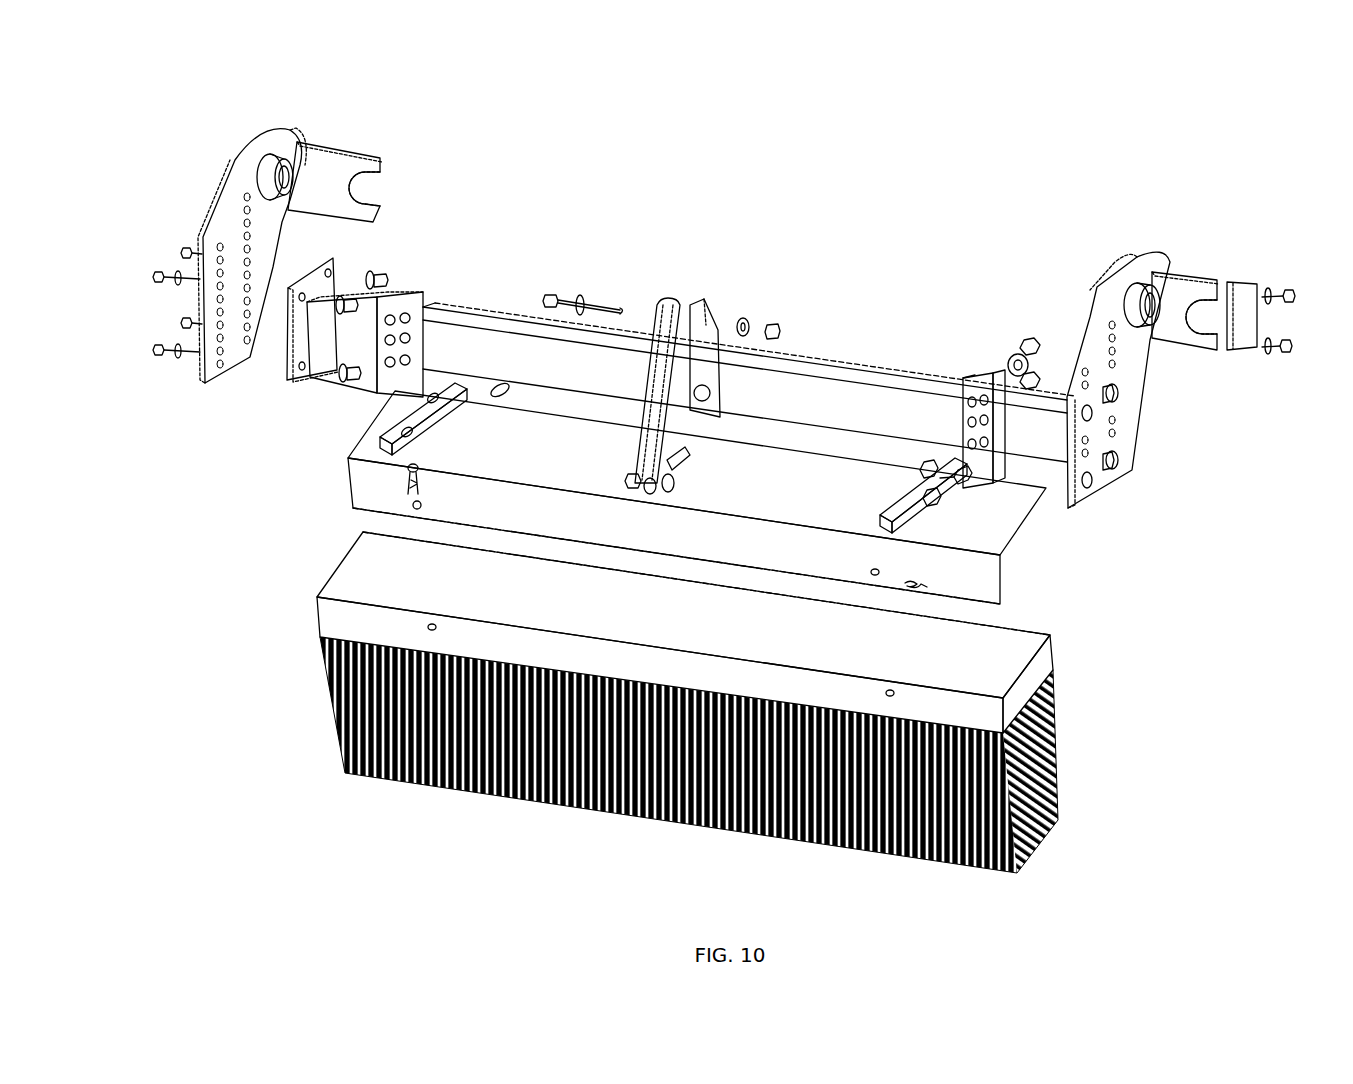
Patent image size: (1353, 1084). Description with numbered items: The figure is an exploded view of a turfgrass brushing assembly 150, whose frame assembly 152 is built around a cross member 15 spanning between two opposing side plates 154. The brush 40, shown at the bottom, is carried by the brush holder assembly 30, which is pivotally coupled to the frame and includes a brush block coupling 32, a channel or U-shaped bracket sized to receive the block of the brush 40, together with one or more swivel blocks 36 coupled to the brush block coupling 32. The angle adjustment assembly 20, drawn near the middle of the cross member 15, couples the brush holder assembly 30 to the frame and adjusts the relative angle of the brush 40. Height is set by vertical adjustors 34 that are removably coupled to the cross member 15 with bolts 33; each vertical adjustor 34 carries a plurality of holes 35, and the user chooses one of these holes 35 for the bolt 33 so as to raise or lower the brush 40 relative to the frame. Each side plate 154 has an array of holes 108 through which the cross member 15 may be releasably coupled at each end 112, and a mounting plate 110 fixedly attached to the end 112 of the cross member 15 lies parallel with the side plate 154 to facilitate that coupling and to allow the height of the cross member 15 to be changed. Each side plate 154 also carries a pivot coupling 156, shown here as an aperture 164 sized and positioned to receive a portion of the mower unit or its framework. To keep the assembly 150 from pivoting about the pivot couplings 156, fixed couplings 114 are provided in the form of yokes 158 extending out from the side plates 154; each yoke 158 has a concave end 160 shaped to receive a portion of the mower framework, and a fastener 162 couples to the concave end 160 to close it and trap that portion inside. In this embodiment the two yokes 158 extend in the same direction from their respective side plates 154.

The cross member 15 is at (482, 322).
The angle adjustment assembly 20 is at (690, 284).
The brush holder assembly 30 is at (1050, 595).
The brush block coupling 32 is at (950, 507).
The bolt 33 is at (388, 360).
The vertical adjustor 34 is at (963, 388).
The plurality of holes 35 is at (982, 440).
The swivel block 36 is at (410, 452).
The brush 40 is at (297, 693).
The array of holes 108 is at (247, 292).
The mounting plate 110 is at (288, 345).
The end 112 is at (315, 348).
The fixed coupling 114 is at (432, 198).
The turfgrass brushing assembly 150 is at (988, 149).
The frame assembly 152 is at (155, 221).
The side plate 154 is at (250, 150).
The pivot coupling 156 is at (262, 176).
The yoke 158 is at (313, 172).
The concave end 160 is at (374, 156).
The fastener 162 is at (1233, 352).
The aperture 164 is at (287, 190).